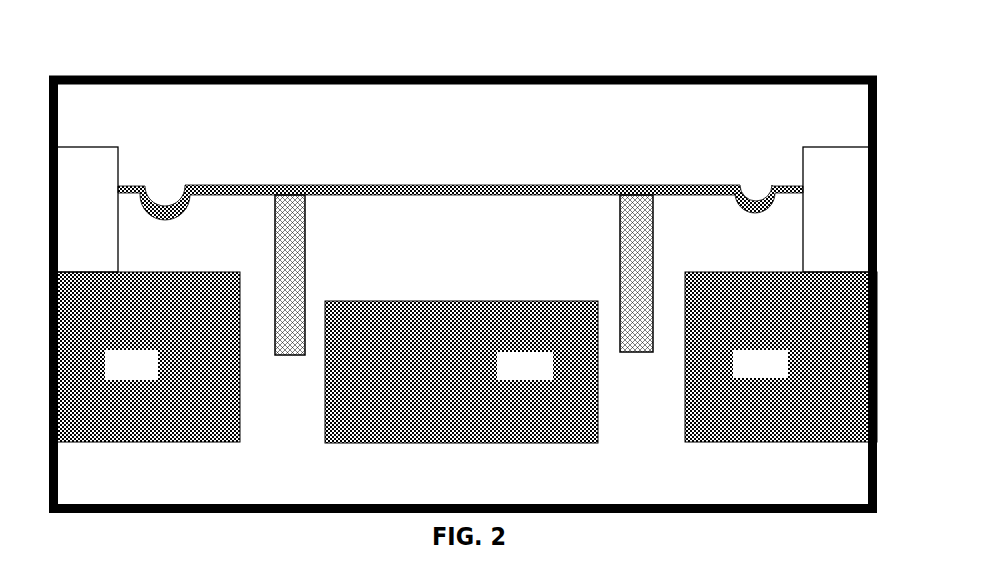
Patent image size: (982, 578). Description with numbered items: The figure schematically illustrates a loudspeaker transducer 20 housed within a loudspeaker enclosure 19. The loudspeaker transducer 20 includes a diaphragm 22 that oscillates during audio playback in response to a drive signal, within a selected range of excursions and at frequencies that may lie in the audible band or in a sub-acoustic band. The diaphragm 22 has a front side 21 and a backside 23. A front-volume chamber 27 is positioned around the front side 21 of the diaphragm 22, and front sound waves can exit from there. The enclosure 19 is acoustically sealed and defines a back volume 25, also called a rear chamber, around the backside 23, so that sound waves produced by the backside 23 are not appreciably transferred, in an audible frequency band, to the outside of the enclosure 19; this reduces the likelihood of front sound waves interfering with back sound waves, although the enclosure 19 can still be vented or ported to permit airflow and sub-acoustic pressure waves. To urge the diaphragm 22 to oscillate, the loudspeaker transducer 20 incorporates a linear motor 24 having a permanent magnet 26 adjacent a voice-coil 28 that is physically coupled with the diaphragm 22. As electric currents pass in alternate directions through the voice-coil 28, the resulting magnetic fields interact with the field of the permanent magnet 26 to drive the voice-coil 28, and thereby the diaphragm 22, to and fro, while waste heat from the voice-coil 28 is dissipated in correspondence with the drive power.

The loudspeaker enclosure 19 is at (870, 100).
The loudspeaker transducer 20 is at (136, 53).
The front side 21 is at (435, 185).
The diaphragm 22 is at (346, 168).
The backside 23 is at (527, 197).
The linear motor 24 is at (272, 444).
The back volume 25 is at (653, 479).
The permanent magnet 26 is at (143, 377).
The front-volume chamber 27 is at (623, 140).
The voice-coil 28 is at (305, 267).